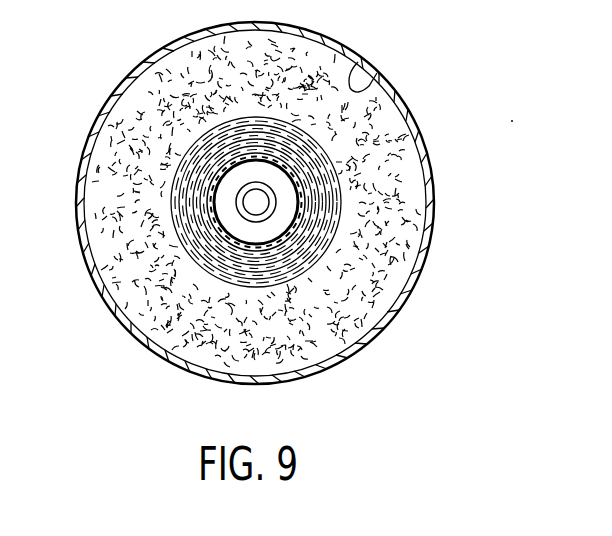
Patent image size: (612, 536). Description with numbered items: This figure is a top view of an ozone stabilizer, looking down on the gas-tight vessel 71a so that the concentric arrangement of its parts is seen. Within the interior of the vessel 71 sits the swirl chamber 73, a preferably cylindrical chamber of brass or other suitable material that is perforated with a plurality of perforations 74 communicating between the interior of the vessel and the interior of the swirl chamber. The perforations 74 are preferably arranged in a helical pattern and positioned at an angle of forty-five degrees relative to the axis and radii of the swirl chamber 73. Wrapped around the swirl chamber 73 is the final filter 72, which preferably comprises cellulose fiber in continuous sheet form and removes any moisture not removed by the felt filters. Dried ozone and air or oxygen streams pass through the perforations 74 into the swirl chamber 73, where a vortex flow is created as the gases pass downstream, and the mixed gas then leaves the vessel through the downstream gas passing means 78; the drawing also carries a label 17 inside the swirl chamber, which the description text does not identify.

The vessel 71 is at (363, 127).
The gas-tight vessel 71a is at (352, 76).
The central bore 17 is at (287, 190).
The means for passing a flow of gas from the vessel downstream from the swirl chambe 78 is at (247, 198).
The final filter 72 is at (170, 192).
The swirl chamber 73 is at (207, 217).
The perforations 74 is at (275, 252).